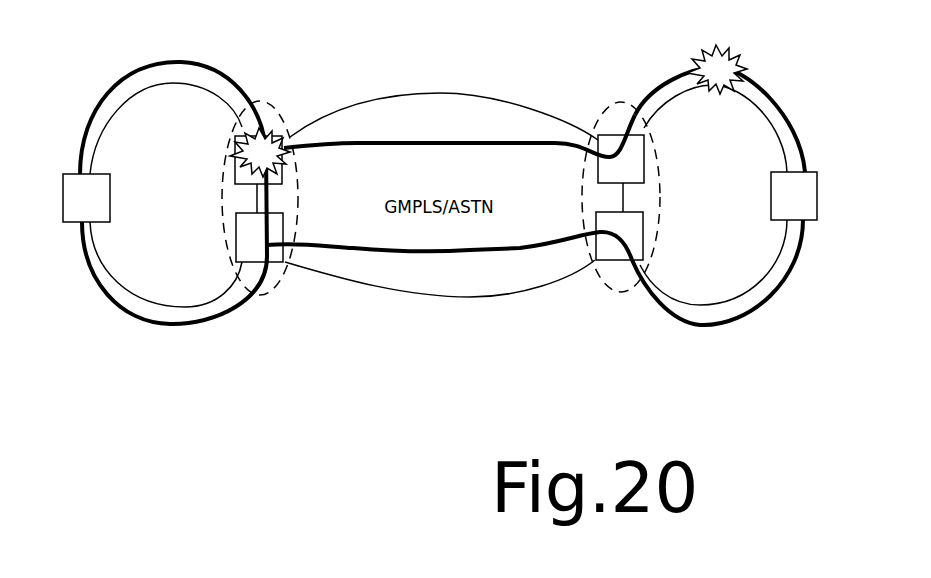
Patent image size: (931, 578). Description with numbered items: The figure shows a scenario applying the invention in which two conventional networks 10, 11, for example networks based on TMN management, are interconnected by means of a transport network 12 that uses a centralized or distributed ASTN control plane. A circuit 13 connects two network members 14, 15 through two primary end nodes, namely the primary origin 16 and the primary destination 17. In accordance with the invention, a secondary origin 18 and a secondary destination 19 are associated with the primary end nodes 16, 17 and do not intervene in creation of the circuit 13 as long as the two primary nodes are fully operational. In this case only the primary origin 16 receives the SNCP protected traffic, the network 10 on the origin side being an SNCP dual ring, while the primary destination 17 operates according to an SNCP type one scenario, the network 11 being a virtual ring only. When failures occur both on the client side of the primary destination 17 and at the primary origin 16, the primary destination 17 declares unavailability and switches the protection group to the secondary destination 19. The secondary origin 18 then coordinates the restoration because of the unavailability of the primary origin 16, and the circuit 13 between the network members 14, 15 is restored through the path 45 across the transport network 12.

The conventional network 10 is at (173, 302).
The conventional network 11 is at (698, 298).
The transport network 12 is at (462, 293).
The circuit 13 is at (402, 140).
The network member 14 is at (72, 217).
The network member 15 is at (805, 215).
The primary origin end node 16 is at (267, 133).
The primary destination end node 17 is at (611, 140).
The secondary origin end node 18 is at (273, 262).
The secondary destination end node 19 is at (603, 263).
The restored circuit path 45 is at (353, 248).